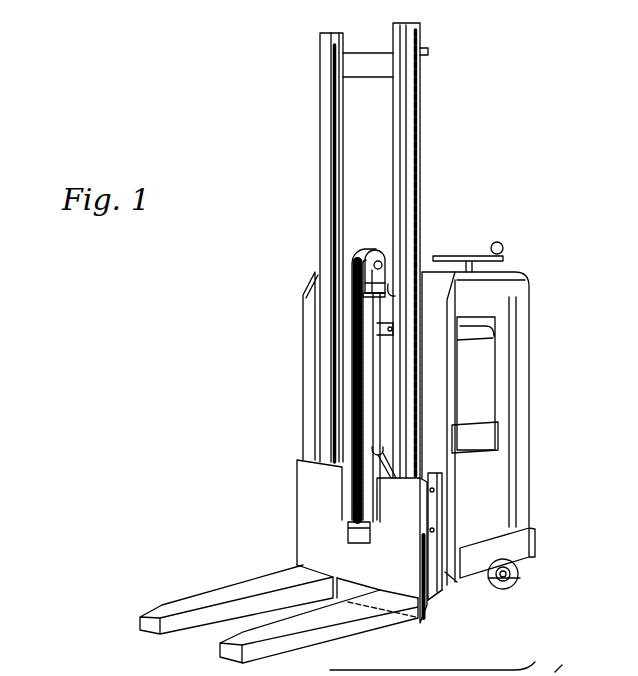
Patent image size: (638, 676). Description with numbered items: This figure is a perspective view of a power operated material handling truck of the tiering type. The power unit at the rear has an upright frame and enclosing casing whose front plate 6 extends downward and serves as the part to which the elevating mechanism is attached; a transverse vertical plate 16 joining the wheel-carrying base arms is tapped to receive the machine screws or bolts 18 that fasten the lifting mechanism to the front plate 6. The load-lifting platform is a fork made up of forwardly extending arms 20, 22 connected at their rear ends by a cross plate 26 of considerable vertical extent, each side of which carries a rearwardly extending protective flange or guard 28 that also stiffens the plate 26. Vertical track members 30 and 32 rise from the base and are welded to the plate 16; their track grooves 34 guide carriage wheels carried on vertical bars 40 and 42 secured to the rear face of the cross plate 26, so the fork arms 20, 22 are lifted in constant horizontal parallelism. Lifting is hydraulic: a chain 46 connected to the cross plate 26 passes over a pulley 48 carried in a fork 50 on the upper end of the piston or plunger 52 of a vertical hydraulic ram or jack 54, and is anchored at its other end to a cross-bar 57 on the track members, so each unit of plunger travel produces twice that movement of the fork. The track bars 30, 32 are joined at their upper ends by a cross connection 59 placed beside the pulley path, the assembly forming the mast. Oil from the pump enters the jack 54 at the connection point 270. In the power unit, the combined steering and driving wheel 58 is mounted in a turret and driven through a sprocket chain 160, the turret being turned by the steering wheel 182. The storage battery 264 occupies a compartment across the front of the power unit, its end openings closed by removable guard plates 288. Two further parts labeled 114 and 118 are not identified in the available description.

The front plate 6 is at (434, 280).
The transverse vertical plate 16 is at (434, 516).
The machine screws or bolts 18 is at (434, 490).
The fork arm 20 is at (235, 590).
The fork arm 22 is at (360, 600).
The cross plate 26 is at (310, 521).
The protective flange or guard 28 is at (433, 604).
The vertical track member 30 is at (420, 152).
The vertical track member 32 is at (320, 139).
The track grooves 34 is at (407, 108).
The vertical plate or bar 40 is at (318, 461).
The vertical plate or bar 42 is at (420, 478).
The chain 46 is at (356, 445).
The pulley 48 is at (370, 248).
The fork 50 is at (365, 275).
The piston or plunger 52 is at (363, 297).
The hydraulic ram or jack 54 is at (374, 361).
The cross-bar 57 is at (380, 300).
The combined steering and driving wheel 58 is at (512, 596).
The cross connection 59 is at (363, 58).
The floor 114 is at (532, 668).
The floor surface 118 is at (568, 674).
The sprocket chain 160 is at (498, 590).
The steering wheel 182 is at (470, 257).
The storage battery 264 is at (480, 363).
The pipe connection point 270 is at (374, 448).
The guard plates 288 is at (492, 436).